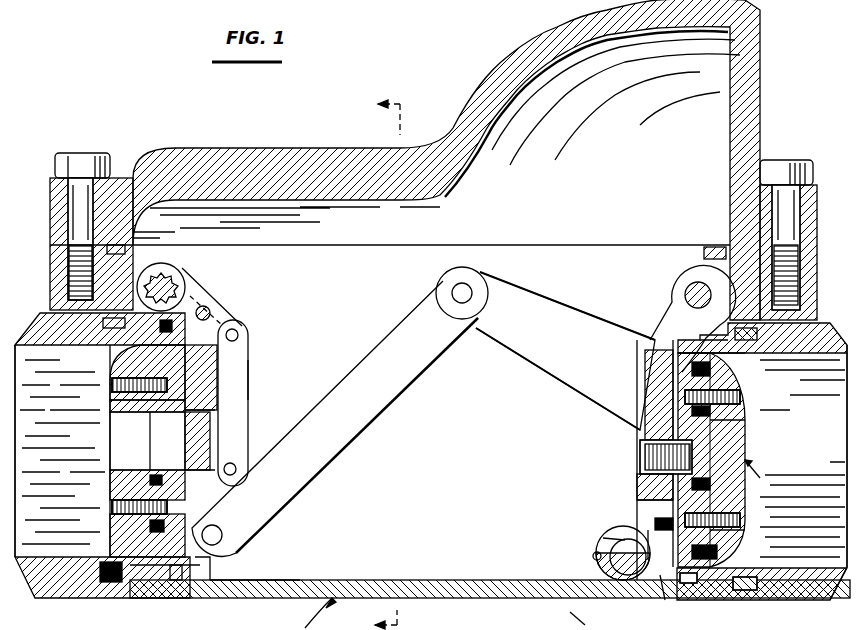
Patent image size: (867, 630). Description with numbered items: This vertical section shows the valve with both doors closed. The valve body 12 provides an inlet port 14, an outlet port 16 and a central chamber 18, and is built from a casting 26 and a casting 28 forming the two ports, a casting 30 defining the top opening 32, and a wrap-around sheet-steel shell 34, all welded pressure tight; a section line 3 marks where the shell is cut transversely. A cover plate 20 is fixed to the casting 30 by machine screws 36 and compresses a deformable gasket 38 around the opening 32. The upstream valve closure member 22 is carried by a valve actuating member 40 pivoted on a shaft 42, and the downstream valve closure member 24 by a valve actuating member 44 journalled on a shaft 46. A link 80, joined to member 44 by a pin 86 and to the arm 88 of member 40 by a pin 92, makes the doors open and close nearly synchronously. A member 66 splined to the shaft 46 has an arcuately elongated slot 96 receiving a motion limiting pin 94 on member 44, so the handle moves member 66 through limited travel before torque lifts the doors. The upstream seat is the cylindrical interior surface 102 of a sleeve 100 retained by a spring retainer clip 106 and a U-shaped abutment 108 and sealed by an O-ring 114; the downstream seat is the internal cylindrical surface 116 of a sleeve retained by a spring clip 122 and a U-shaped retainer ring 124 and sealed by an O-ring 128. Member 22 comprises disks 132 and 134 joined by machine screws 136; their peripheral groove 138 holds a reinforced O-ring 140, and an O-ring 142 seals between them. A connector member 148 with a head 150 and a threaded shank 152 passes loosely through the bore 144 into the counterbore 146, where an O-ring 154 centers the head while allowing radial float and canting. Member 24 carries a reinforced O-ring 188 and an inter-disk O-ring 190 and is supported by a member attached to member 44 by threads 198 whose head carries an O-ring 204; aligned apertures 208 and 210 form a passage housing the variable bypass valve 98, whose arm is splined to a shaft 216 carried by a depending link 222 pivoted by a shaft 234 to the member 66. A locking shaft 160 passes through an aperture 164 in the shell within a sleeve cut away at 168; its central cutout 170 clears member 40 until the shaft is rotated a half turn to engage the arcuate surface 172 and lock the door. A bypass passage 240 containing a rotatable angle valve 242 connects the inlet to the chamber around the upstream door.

The valve body 12 is at (313, 614).
The inlet port 14 is at (820, 568).
The outlet port 16 is at (46, 548).
The central chamber 18 is at (445, 580).
The cover plate 20 is at (358, 148).
The upstream valve closure member 22 is at (765, 477).
The downstream valve closure member 24 is at (70, 441).
The casting 26 is at (792, 598).
The casting 28 is at (58, 598).
The casting 30 is at (812, 268).
The top opening 32 is at (730, 255).
The wrap around part of sheet steel 34 is at (240, 598).
The machine screws 36 is at (96, 156).
The deformable gasket 38 is at (140, 241).
The valve actuating member 40 is at (652, 338).
The shaft 42 is at (685, 288).
The valve actuating member 44 is at (250, 369).
The shaft 46 is at (175, 268).
The member 66 is at (214, 298).
The link 80 is at (375, 348).
The pin 86 is at (216, 526).
The arm 88 is at (530, 362).
The pin 92 is at (452, 288).
The motion limiting pin 94 is at (210, 313).
The arcuately elongated slot 96 is at (200, 338).
The variable bypass valve 98 is at (195, 443).
The sleeve 100 is at (738, 358).
The cylindrical interior surface 102 is at (775, 355).
The U-shaped spring retainer clip 106 is at (680, 598).
The U-shaped abutment 108 is at (670, 600).
The O-ring 114 is at (745, 598).
The internal cylindrical surface 116 is at (105, 598).
The spring clip 122 is at (170, 598).
The U-shaped retainer ring 124 is at (212, 568).
The O-ring 128 is at (105, 345).
The disk 132 is at (738, 412).
The disk 134 is at (668, 428).
The machine screws 136 is at (740, 398).
The peripheral annular groove 138 is at (738, 536).
The internally circumferentially reinforced O-ring 140 is at (722, 552).
The O-ring 142 is at (725, 372).
The through bore 144 is at (642, 498).
The counterbore 146 is at (738, 495).
The connector member 148 is at (640, 452).
The head 150 is at (720, 452).
The threaded shank 152 is at (640, 480).
The O-ring 154 is at (738, 433).
The shaft 160 is at (618, 592).
The aperture 164 is at (593, 558).
The cutaway 168 is at (610, 556).
The central cutout 170 is at (618, 540).
The arcuate surface 172 is at (648, 552).
The internally reinforced O-ring 188 is at (118, 544).
The O-ring 190 is at (118, 380).
The threads 198 is at (212, 409).
The O-ring 204 is at (215, 466).
The through aperture 208 is at (118, 470).
The through aperture 210 is at (118, 420).
The shaft 216 is at (238, 471).
The depending link 222 is at (250, 386).
The shaft 234 is at (238, 334).
The bypass passage 240 is at (780, 629).
The rotatable angle valve 242 is at (570, 618).
The section line 3 is at (394, 362).